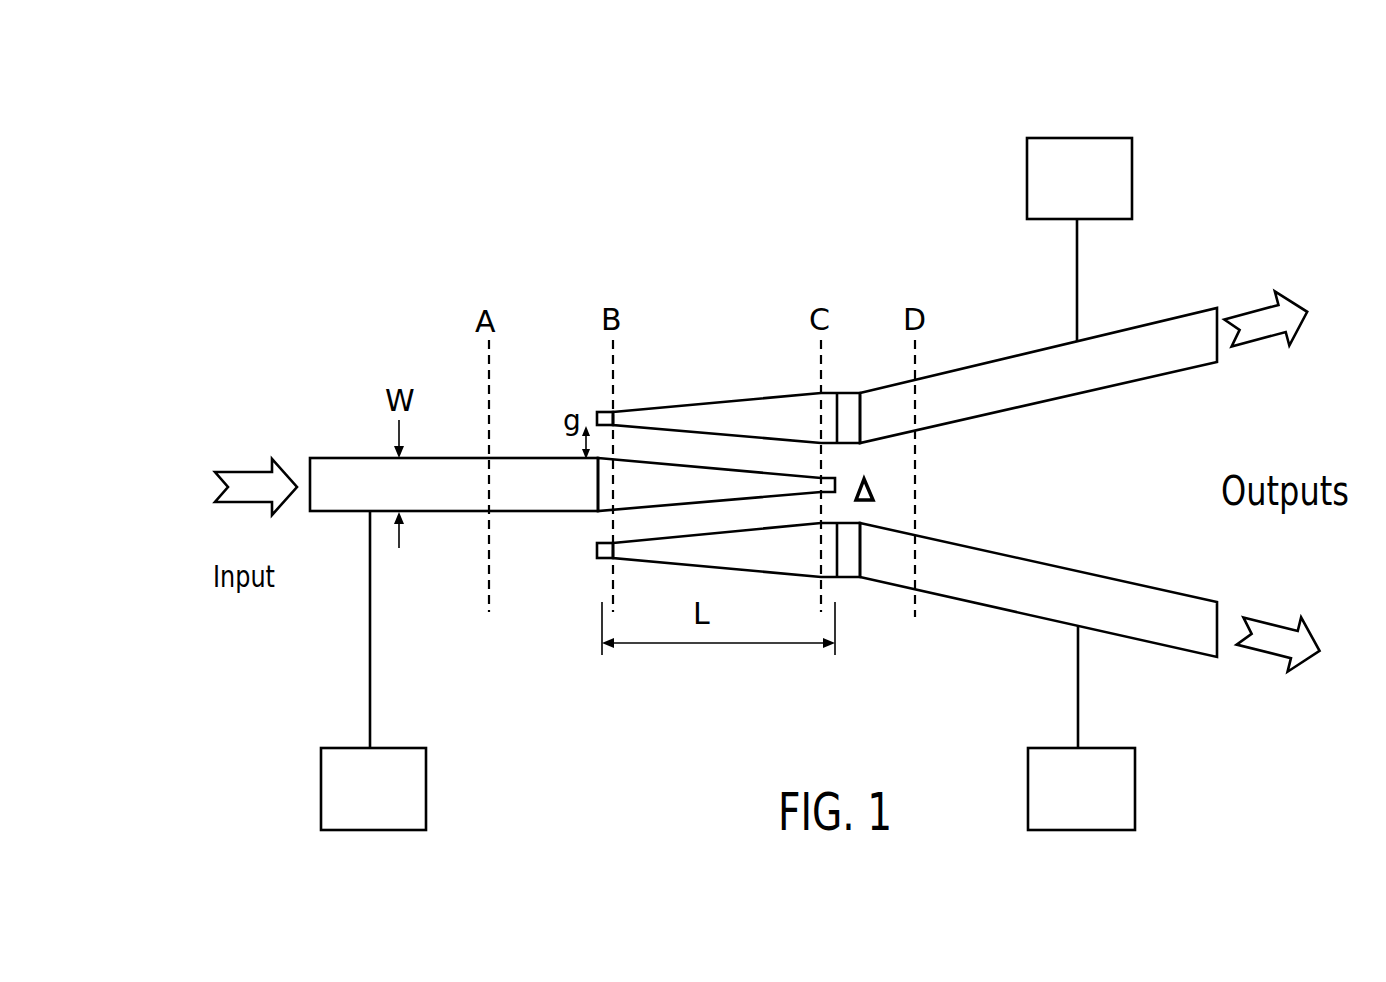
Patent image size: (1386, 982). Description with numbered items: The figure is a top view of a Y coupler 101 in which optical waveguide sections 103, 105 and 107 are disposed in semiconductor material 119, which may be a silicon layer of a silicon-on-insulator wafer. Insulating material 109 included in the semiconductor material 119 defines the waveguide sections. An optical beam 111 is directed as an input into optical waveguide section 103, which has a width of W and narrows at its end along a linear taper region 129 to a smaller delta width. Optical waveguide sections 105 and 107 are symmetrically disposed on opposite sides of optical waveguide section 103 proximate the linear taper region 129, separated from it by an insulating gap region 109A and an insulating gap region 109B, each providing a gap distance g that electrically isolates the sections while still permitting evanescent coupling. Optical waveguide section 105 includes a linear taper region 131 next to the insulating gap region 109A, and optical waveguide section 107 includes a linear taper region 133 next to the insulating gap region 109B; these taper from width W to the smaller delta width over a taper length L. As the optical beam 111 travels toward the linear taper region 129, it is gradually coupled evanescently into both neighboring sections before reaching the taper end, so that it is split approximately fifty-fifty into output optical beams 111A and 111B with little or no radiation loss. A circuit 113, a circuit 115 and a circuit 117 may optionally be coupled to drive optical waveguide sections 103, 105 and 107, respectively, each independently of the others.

The Y coupler 101 is at (462, 185).
The optical waveguide section 103 is at (338, 458).
The optical waveguide section 105 is at (1112, 387).
The optical waveguide section 107 is at (1085, 570).
The insulating material 109 is at (722, 487).
The insulating gap region 109A is at (716, 475).
The insulating gap region 109B is at (728, 519).
The optical beam 111 is at (230, 458).
The optical beam 111A is at (1263, 302).
The optical beam 111B is at (1271, 659).
The circuit 113 is at (426, 768).
The circuit 115 is at (1132, 158).
The circuit 117 is at (1135, 768).
The semiconductor material 119 is at (735, 482).
The linear taper region 129 is at (793, 470).
The linear taper region 131 is at (694, 406).
The linear taper region 133 is at (753, 571).